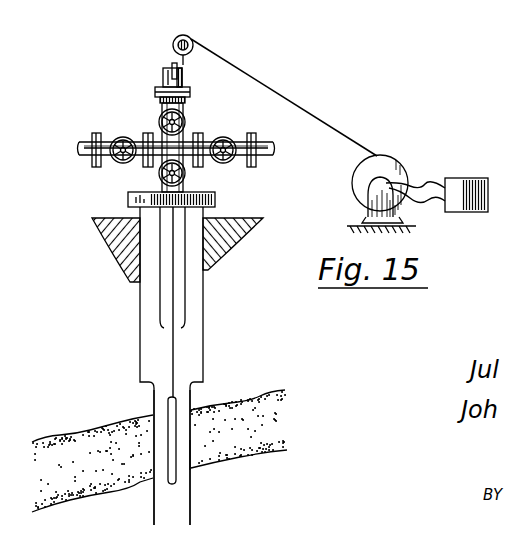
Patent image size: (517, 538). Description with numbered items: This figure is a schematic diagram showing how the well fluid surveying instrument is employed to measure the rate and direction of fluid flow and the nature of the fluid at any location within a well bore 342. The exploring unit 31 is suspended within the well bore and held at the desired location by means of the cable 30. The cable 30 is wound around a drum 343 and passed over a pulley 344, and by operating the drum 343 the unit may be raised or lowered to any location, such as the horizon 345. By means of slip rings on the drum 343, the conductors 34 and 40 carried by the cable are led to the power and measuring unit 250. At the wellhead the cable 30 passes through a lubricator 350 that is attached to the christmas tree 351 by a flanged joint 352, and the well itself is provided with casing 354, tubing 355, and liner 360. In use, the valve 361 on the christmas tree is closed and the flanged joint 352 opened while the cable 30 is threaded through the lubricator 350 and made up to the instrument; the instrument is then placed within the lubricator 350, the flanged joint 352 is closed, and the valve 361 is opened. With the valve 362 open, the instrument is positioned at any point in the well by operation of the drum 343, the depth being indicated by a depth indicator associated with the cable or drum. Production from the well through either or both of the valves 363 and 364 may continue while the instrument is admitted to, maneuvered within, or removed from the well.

The cable 30 is at (305, 109).
The exploring unit 31 is at (167, 414).
The conductor 34 is at (415, 200).
The steel braid 40 is at (441, 184).
The power and measuring unit 250 is at (475, 184).
The well bore 342 is at (190, 503).
The drum 343 is at (393, 166).
The pulley 344 is at (190, 37).
The horizon 345 is at (159, 451).
The lubricator 350 is at (186, 73).
The christmas tree 351 is at (186, 135).
The flanged joint 352 is at (191, 90).
The casing 354 is at (203, 313).
The tubing 355 is at (160, 322).
The liner 360 is at (191, 462).
The valve 361 is at (160, 128).
The valve 362 is at (185, 177).
The valve 363 is at (120, 163).
The valve 364 is at (230, 161).